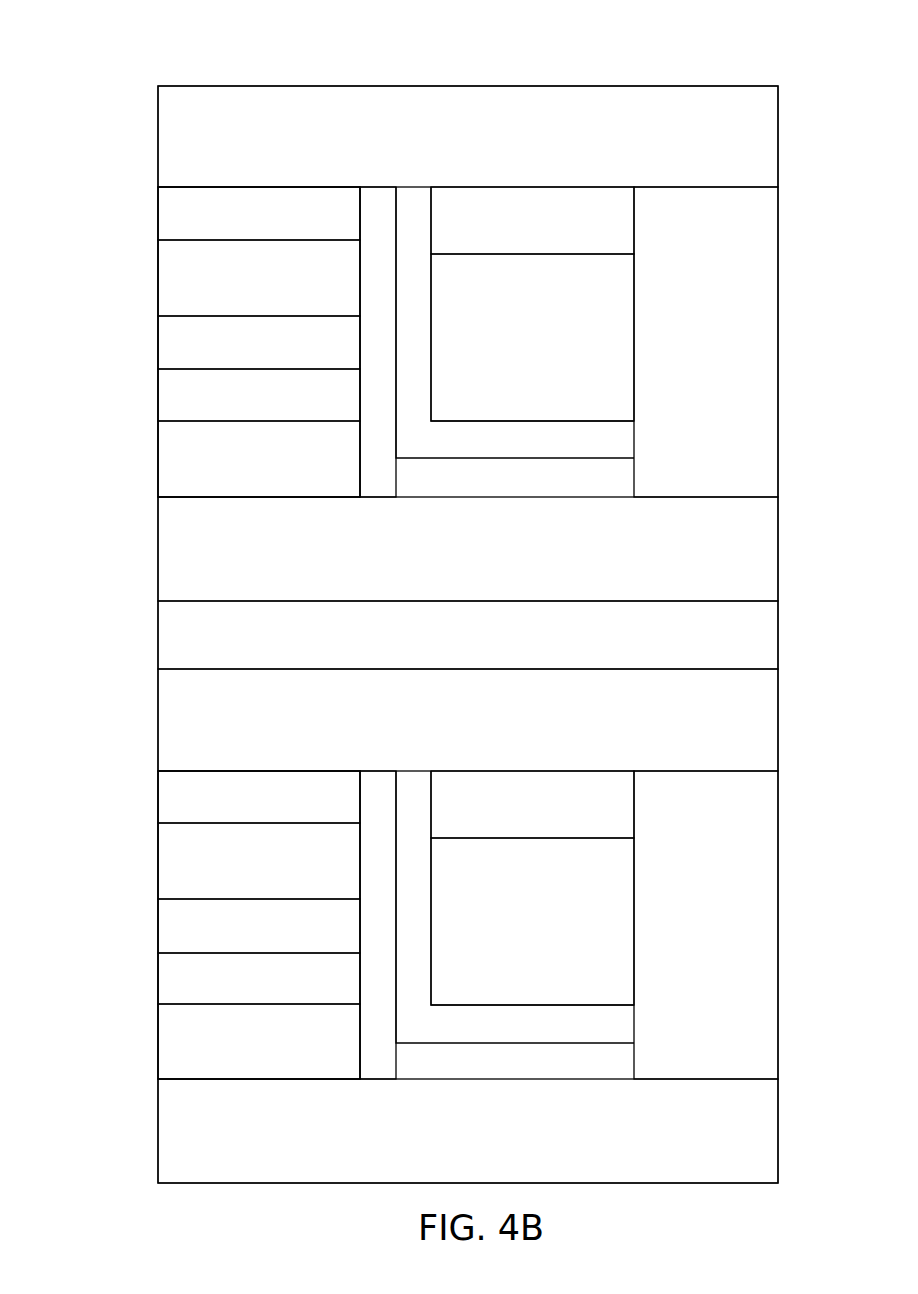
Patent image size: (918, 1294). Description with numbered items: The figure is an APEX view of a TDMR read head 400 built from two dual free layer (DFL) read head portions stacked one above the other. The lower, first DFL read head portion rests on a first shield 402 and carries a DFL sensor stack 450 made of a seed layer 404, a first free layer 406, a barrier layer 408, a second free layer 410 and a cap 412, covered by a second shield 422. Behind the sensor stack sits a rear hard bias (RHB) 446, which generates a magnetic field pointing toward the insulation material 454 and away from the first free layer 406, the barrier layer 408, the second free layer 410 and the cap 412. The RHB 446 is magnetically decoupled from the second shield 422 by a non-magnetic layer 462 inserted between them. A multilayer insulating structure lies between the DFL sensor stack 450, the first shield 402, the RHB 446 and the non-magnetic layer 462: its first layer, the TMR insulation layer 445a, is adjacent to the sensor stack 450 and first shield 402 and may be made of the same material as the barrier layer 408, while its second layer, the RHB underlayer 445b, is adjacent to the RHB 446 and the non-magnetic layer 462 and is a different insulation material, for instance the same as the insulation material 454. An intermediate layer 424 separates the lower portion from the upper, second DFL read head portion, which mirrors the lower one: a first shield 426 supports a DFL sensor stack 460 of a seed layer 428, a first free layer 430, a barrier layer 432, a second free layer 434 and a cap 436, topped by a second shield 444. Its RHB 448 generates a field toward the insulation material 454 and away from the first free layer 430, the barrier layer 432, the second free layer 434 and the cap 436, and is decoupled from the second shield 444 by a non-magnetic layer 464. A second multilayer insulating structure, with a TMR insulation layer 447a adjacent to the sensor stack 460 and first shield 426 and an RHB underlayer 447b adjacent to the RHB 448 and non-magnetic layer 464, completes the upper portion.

The TDMR read head 400 is at (170, 69).
The first shield 402 is at (498, 1144).
The seed layer 404 is at (238, 1069).
The first free layer 406 is at (238, 989).
The barrier layer 408 is at (238, 938).
The second free layer 410 is at (238, 874).
The cap 412 is at (238, 808).
The second shield 422 is at (504, 737).
The etch stop layer 424 is at (504, 647).
The first shield 426 is at (498, 560).
The seed layer 428 is at (238, 485).
The first free layer 430 is at (238, 405).
The barrier layer 432 is at (238, 355).
The second free layer 434 is at (238, 290).
The cap 436 is at (238, 225).
The second shield 444 is at (503, 153).
The TMR insulation layer 445a is at (376, 788).
The RHB underlayer 445b is at (415, 788).
The rear hard bias 446 is at (503, 922).
The TMR insulation layer 447a is at (376, 203).
The RHB underlayer 447b is at (415, 203).
The rear hard bias 448 is at (503, 338).
The DFL sensor stack 450 is at (136, 771).
The insulation material 454 is at (688, 338).
The DFL sensor stack 460 is at (136, 187).
The non-magnetic layer 462 is at (503, 815).
The non-magnetic layer 464 is at (503, 232).